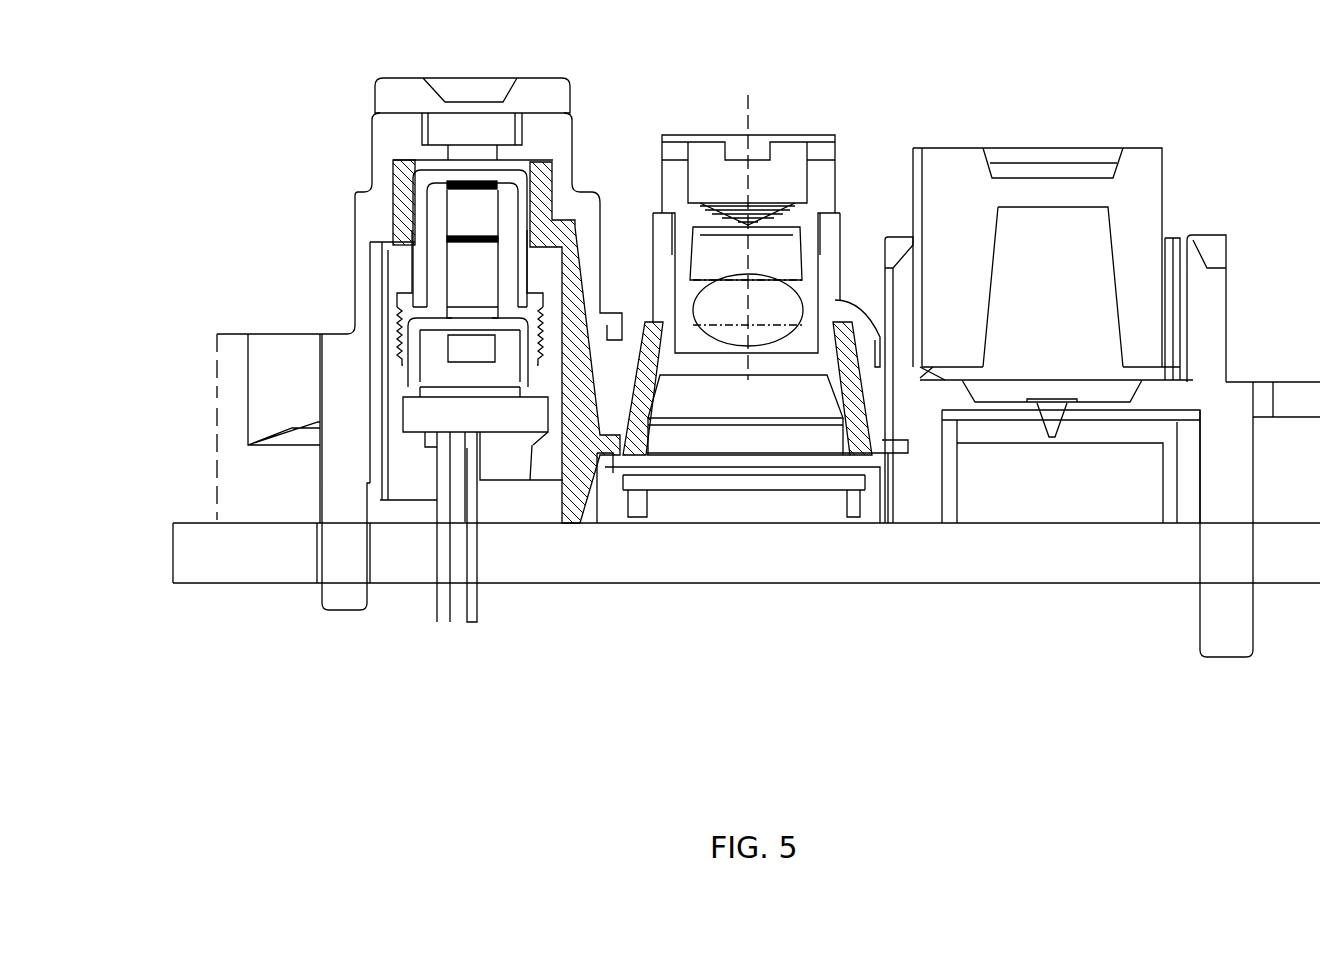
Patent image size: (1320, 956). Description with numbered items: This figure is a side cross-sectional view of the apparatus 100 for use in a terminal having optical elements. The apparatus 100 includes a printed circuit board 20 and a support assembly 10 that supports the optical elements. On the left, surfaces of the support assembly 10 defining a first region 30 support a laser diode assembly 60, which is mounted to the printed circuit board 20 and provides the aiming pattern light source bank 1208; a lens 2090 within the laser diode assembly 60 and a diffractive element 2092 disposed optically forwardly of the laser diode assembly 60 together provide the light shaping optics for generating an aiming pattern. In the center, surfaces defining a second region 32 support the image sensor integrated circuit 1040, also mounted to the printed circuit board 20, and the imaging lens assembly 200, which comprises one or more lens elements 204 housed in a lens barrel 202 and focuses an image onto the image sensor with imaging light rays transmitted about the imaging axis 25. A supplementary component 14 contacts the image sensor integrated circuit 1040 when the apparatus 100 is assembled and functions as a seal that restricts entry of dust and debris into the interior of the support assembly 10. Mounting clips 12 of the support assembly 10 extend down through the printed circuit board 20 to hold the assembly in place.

The support assembly 10 is at (357, 191).
The mounting clip 12 is at (368, 253).
The supplementary component 14 is at (544, 172).
The printed circuit board 20 is at (1062, 523).
The imaging axis 25 is at (749, 125).
The first region 30 is at (520, 488).
The second region 32 is at (761, 511).
The laser diode assembly 60 is at (380, 282).
The apparatus 100 is at (1121, 103).
The imaging lens assembly 200 is at (656, 156).
The lens barrel 202 is at (826, 172).
The lens element 204 is at (800, 283).
The image sensor integrated circuit 1040 is at (887, 505).
The aiming pattern light source bank 1208 is at (470, 365).
The lens 2090 is at (442, 246).
The diffractive element 2092 is at (431, 128).